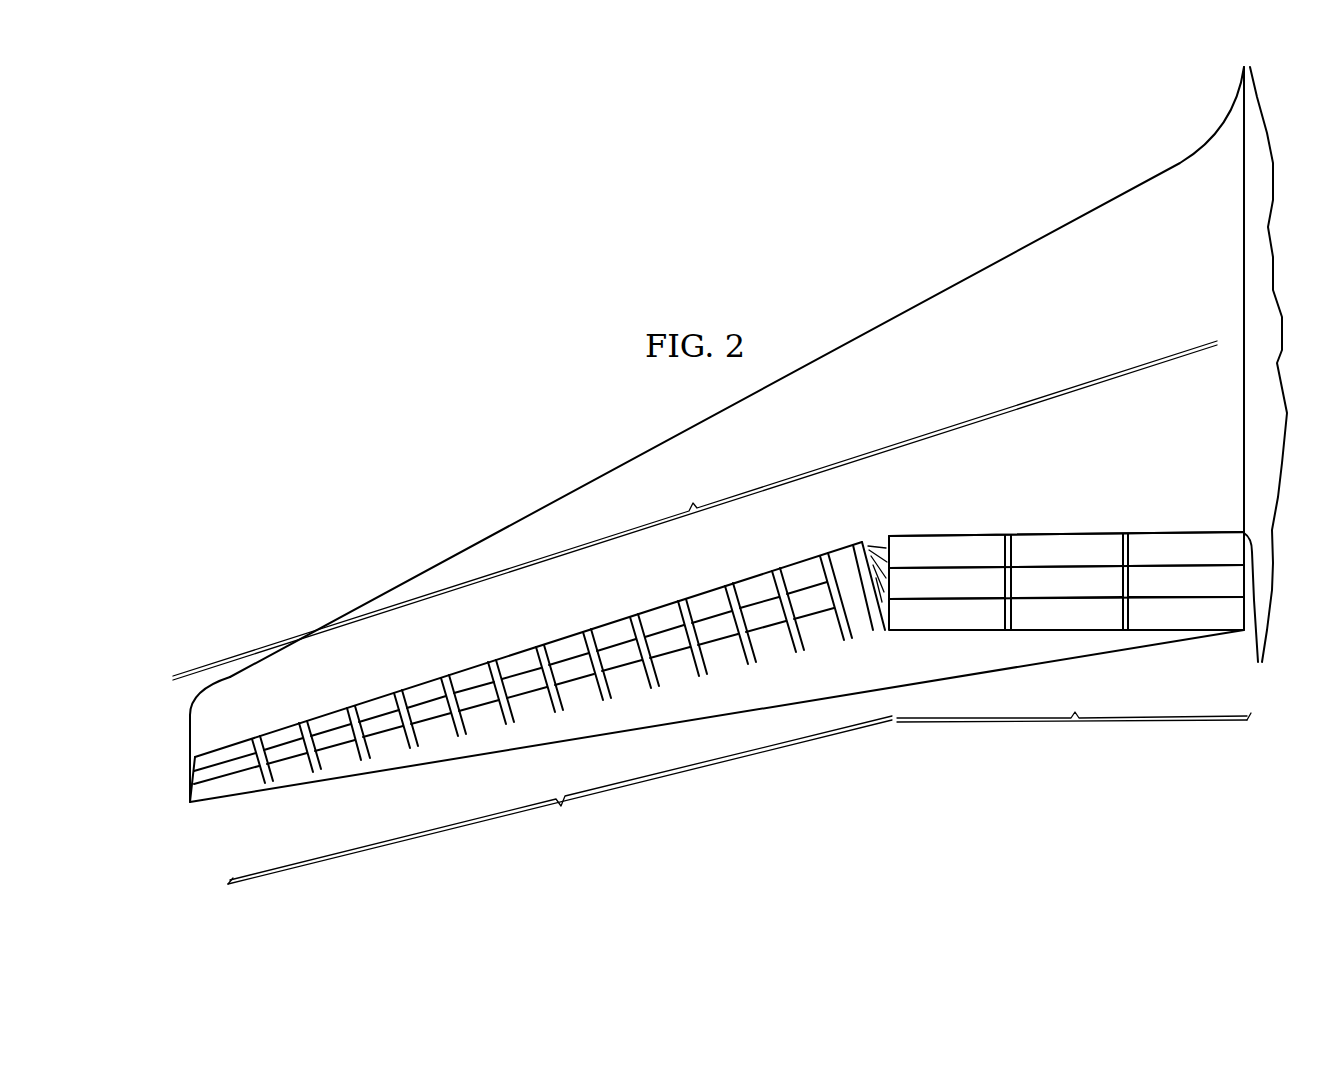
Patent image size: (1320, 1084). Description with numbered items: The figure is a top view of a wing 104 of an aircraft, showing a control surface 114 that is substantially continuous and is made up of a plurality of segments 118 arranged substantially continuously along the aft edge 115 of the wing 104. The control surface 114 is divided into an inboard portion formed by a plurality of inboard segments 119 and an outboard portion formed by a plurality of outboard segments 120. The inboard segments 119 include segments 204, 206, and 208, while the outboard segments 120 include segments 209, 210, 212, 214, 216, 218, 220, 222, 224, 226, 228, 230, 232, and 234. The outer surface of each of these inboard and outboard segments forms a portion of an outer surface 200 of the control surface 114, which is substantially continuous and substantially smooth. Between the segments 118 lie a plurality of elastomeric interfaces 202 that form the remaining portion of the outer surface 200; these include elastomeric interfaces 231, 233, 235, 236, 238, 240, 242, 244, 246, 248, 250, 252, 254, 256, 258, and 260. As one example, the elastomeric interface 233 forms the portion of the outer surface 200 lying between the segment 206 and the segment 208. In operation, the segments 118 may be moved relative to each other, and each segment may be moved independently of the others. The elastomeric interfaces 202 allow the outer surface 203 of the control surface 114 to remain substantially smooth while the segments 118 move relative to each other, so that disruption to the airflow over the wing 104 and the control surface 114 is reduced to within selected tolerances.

The wing 104 is at (538, 497).
The control surface 114 is at (1052, 534).
The aft edge 115 is at (190, 812).
The segments 118 is at (695, 510).
The inboard segments 119 is at (1074, 734).
The outboard segments 120 is at (560, 800).
The outer surface 200 is at (1100, 612).
The elastomeric interfaces 202 is at (698, 689).
The outer surface 203 is at (715, 612).
The segment 204 is at (1188, 633).
The segment 206 is at (1033, 633).
The segment 208 is at (950, 633).
The segment 209 is at (869, 631).
The segment 210 is at (819, 646).
The segment 212 is at (770, 657).
The segment 214 is at (722, 670).
The segment 216 is at (672, 686).
The segment 218 is at (624, 698).
The segment 220 is at (576, 709).
The segment 222 is at (528, 721).
The segment 224 is at (480, 733).
The segment 226 is at (432, 745).
The segment 228 is at (384, 757).
The segment 230 is at (336, 769).
The segment 232 is at (288, 782).
The segment 234 is at (231, 795).
The elastomeric interface 231 is at (1126, 533).
The elastomeric interface 233 is at (1005, 533).
The elastomeric interface 235 is at (878, 540).
The elastomeric interface 236 is at (824, 555).
The elastomeric interface 238 is at (776, 570).
The elastomeric interface 240 is at (729, 585).
The elastomeric interface 242 is at (682, 600).
The elastomeric interface 244 is at (634, 616).
The elastomeric interface 246 is at (587, 631).
The elastomeric interface 248 is at (540, 646).
The elastomeric interface 250 is at (492, 661).
The elastomeric interface 252 is at (445, 677).
The elastomeric interface 254 is at (398, 692).
The elastomeric interface 256 is at (351, 707).
The elastomeric interface 258 is at (303, 722).
The elastomeric interface 260 is at (256, 737).